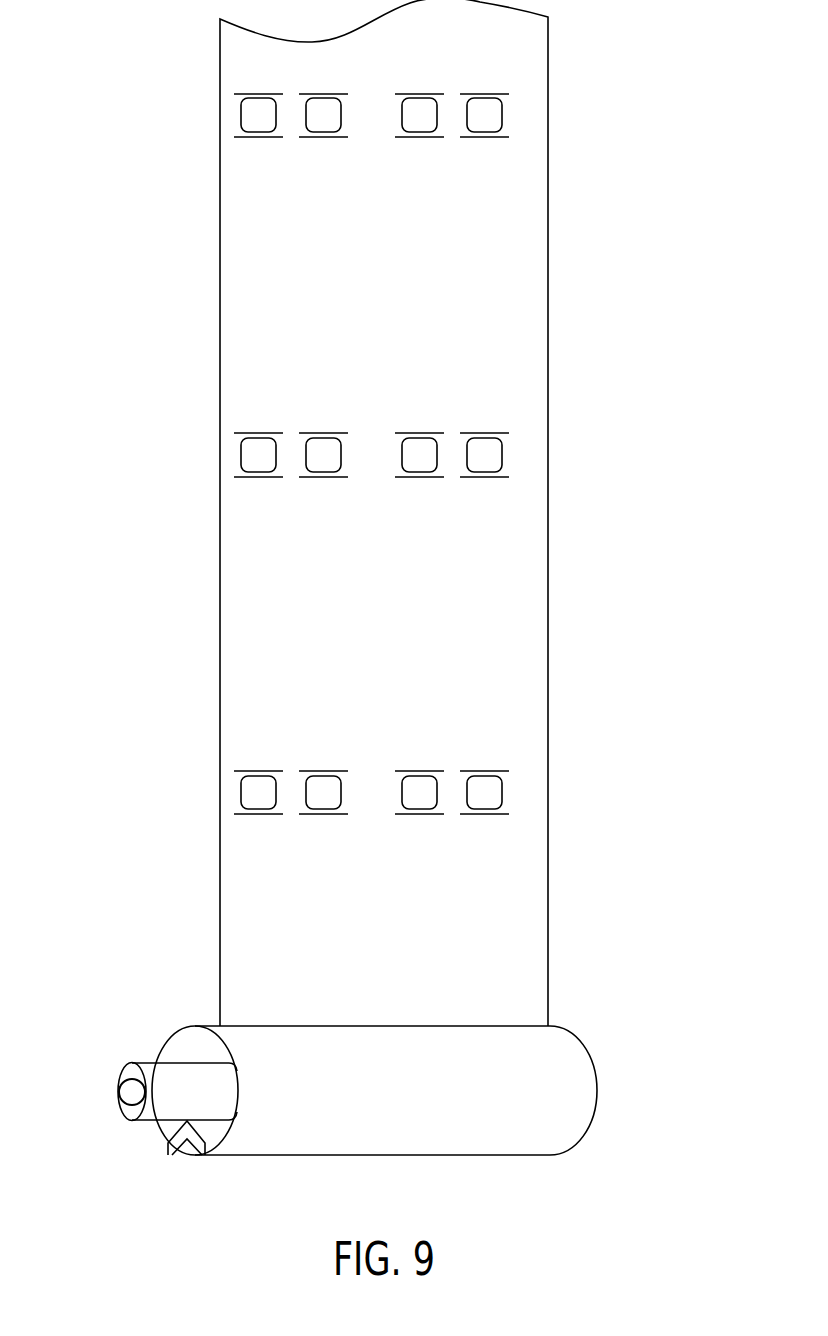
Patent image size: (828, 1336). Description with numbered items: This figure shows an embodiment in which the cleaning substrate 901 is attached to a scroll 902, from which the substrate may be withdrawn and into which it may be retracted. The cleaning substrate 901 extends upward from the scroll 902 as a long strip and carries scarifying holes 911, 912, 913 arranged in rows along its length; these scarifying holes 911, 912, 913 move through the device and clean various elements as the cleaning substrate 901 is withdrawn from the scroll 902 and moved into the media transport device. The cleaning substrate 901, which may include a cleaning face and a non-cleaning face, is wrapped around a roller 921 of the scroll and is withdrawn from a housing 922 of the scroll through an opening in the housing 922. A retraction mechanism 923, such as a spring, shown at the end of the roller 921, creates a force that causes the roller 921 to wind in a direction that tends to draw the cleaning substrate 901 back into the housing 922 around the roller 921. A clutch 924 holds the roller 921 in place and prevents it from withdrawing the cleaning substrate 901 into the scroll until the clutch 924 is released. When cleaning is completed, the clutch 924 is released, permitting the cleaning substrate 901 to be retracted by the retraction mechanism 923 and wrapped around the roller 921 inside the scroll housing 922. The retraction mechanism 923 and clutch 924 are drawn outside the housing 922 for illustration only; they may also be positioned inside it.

The cleaning substrate 901 is at (218, 173).
The scroll 902 is at (600, 1072).
The scarifying hole 911 is at (527, 115).
The scarifying hole 912 is at (525, 455).
The scarifying hole 913 is at (525, 795).
The roller 921 is at (218, 1093).
The housing 922 is at (190, 1026).
The retraction mechanism 923 is at (120, 1085).
The clutch 924 is at (190, 1147).